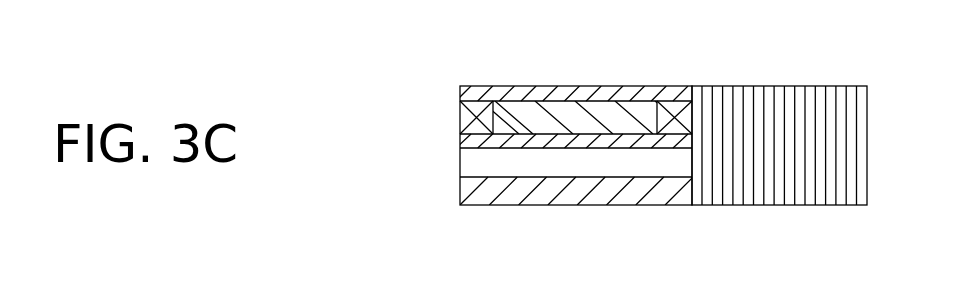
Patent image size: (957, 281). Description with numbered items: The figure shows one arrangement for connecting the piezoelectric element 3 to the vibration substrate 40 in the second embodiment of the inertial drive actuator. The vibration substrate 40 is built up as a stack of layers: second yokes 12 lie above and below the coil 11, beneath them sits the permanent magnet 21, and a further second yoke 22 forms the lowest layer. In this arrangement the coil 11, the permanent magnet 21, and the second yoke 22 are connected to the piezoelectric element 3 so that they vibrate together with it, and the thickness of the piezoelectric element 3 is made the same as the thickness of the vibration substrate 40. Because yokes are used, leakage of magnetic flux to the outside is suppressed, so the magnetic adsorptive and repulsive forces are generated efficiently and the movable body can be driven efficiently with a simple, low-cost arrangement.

The piezoelectric element 3 is at (760, 85).
The coil 11 is at (458, 117).
The second yoke 12 is at (458, 95).
The permanent magnet 21 is at (458, 163).
The second yoke 22 is at (458, 187).
The vibration substrate 40 is at (343, 57).